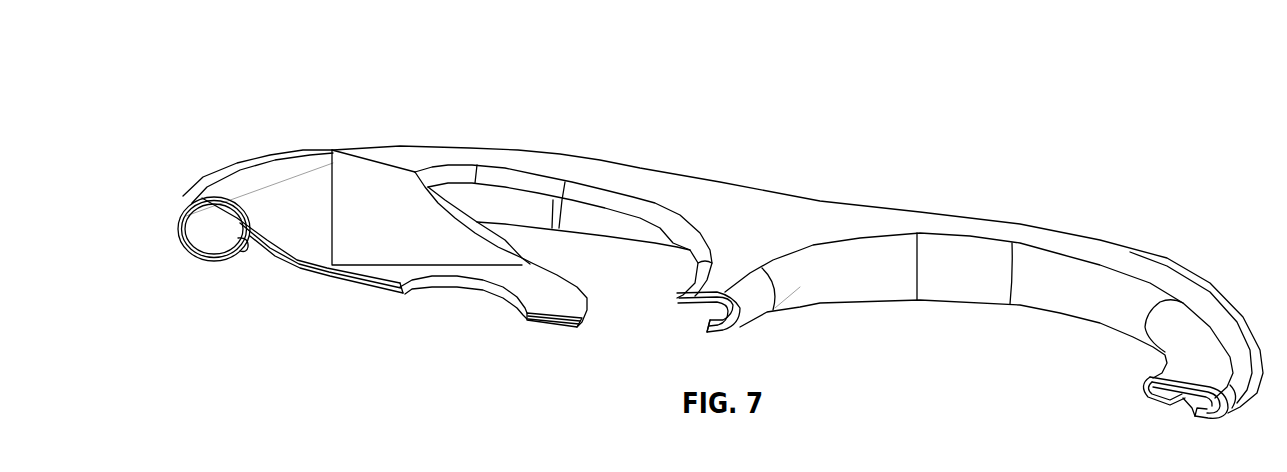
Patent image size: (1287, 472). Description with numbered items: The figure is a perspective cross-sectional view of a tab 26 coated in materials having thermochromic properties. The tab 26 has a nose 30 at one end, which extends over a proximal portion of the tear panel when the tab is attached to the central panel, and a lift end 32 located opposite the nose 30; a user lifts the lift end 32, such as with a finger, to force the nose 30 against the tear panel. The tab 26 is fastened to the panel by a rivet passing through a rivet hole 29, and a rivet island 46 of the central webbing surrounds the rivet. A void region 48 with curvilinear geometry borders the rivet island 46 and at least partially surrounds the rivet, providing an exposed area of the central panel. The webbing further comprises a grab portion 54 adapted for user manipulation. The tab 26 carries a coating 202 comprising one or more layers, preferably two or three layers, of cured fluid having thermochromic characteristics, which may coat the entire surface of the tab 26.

The tab 26 is at (281, 63).
The nose 30 is at (178, 211).
The rivet hole 29 is at (472, 287).
The rivet island 46 is at (292, 202).
The void region 48 is at (624, 286).
The coating 202 is at (747, 325).
The grab portion 54 is at (1040, 240).
The lift end 32 is at (1220, 287).